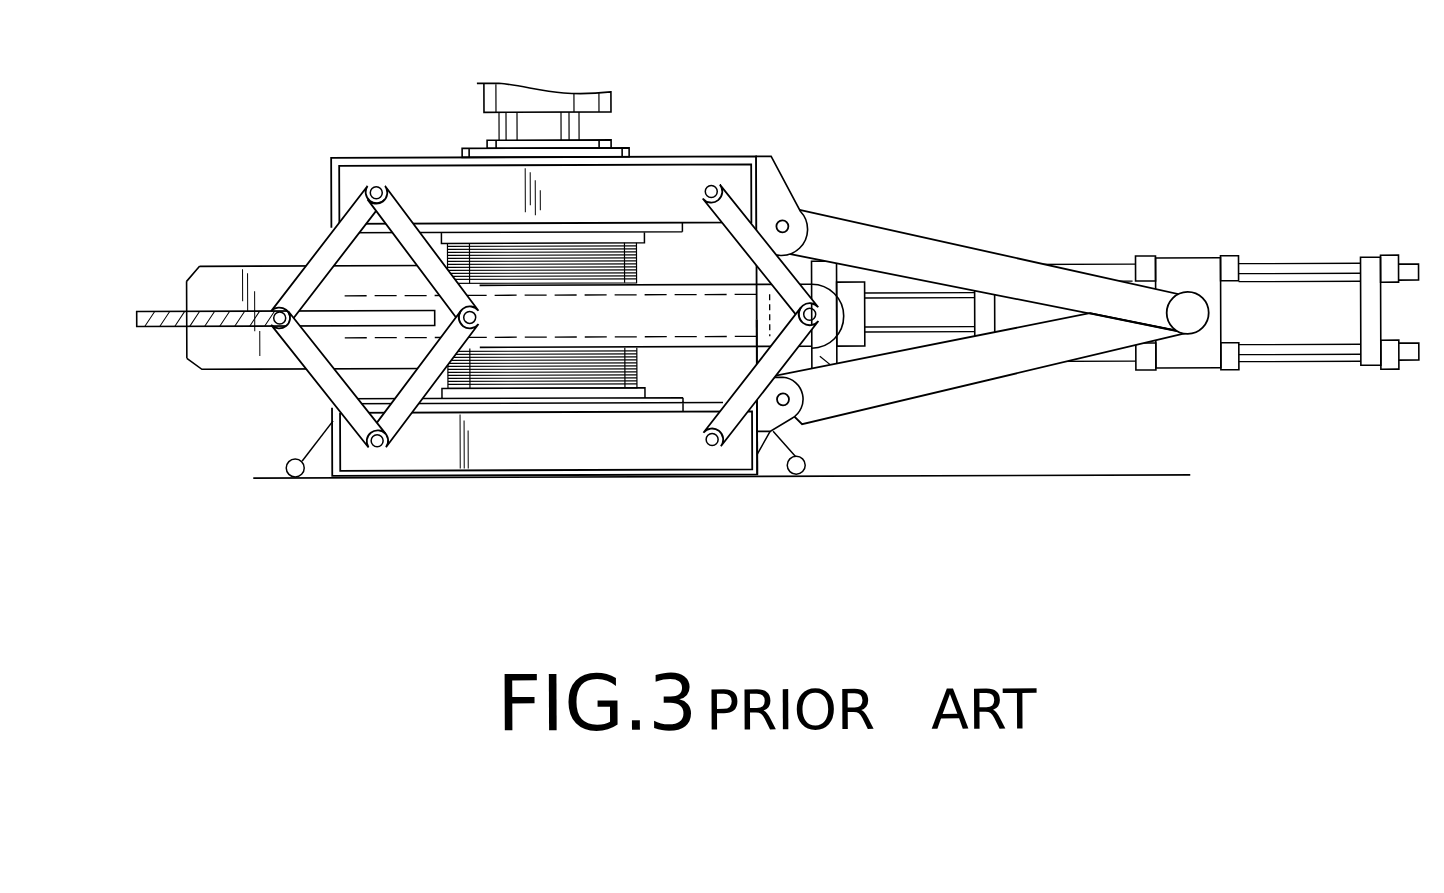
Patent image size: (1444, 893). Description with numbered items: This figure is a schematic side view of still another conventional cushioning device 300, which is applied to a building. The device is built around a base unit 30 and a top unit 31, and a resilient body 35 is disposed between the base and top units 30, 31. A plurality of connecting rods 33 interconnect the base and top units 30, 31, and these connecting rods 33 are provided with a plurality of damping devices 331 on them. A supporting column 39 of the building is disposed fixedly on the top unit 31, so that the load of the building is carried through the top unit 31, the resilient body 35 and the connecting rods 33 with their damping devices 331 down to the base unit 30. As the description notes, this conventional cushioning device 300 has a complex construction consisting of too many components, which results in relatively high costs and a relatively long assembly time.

The conventional cushioning device 300 is at (778, 285).
The base unit 30 is at (508, 458).
The top unit 31 is at (653, 195).
The connecting rods 33 is at (333, 253).
The damping devices 331 is at (1199, 275).
The resilient body 35 is at (543, 365).
The supporting column 39 is at (512, 104).